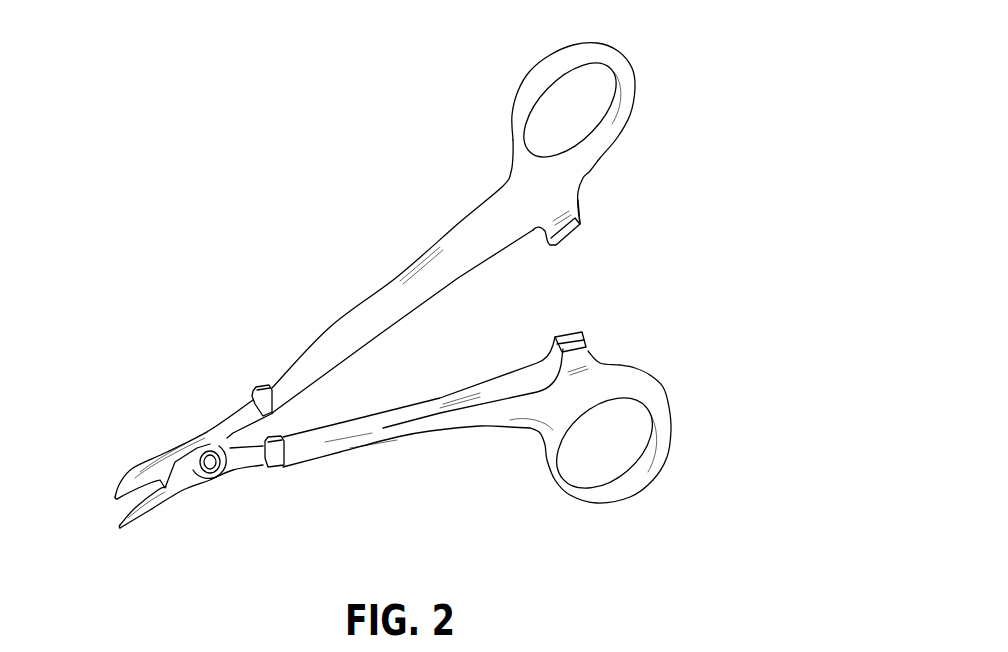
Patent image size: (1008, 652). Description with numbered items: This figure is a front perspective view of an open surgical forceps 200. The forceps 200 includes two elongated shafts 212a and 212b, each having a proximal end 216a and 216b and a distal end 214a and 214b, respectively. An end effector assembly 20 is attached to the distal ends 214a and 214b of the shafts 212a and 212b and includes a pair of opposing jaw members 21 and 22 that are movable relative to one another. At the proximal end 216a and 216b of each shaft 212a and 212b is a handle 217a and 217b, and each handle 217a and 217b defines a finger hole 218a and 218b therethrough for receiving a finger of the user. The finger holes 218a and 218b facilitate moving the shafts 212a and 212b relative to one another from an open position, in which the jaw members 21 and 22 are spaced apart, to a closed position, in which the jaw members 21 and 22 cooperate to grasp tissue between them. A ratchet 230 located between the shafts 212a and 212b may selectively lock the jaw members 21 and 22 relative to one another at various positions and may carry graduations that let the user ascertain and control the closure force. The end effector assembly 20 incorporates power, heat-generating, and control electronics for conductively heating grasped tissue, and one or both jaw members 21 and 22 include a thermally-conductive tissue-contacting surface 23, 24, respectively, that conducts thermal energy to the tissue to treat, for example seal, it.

The open forceps 200 is at (213, 188).
The end effector assembly 20 is at (237, 375).
The jaw member 21 is at (140, 470).
The jaw member 22 is at (140, 518).
The thermally-conductive tissue-contacting surface 23 is at (118, 498).
The thermally-conductive tissue-contacting surface 24 is at (123, 518).
The elongated shaft 212a is at (418, 433).
The elongated shaft 212b is at (392, 290).
The distal end 214a is at (283, 463).
The distal end 214b is at (273, 382).
The proximal end 216a is at (520, 423).
The proximal end 216b is at (503, 201).
The handle 217a is at (655, 400).
The handle 217b is at (625, 107).
The finger hole 218a is at (618, 435).
The finger hole 218b is at (590, 93).
The ratchet 230 is at (568, 238).